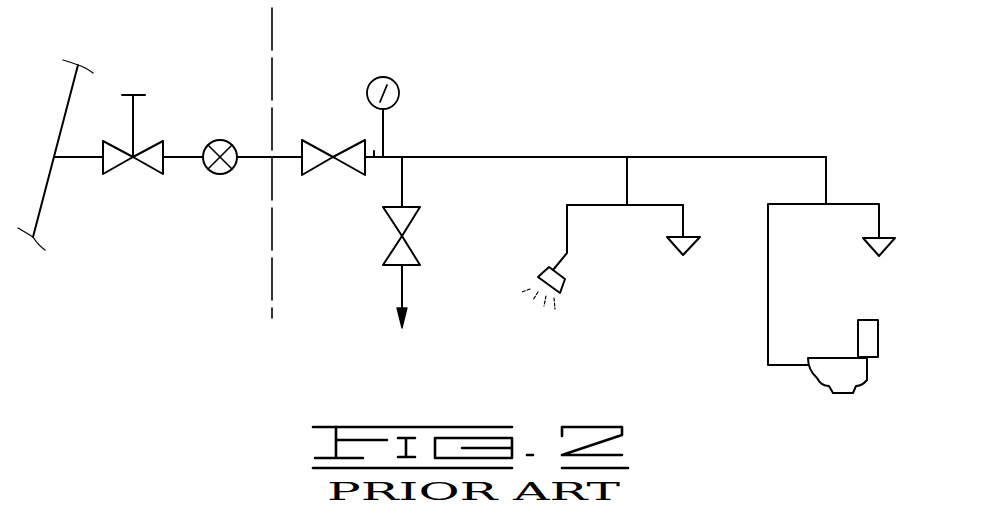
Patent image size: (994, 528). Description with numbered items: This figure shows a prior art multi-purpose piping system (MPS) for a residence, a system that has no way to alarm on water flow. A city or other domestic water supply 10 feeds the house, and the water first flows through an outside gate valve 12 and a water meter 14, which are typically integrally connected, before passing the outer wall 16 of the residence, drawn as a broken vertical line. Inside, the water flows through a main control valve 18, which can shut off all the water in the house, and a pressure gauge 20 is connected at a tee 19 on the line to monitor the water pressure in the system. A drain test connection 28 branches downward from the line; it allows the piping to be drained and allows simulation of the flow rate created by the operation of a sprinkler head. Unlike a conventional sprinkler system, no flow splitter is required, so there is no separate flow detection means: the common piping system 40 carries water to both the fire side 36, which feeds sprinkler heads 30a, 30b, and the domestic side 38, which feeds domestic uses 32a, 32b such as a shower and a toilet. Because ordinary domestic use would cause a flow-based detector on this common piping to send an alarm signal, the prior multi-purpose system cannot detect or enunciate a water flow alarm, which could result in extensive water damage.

The domestic water supply 10 is at (38, 213).
The outside gate valve 12 is at (148, 142).
The water meter 14 is at (218, 174).
The outer wall 16 is at (272, 30).
The main control valve 18 is at (350, 145).
The tee connection 19 is at (374, 152).
The pressure gauge 20 is at (397, 82).
The drain test connection 28 is at (392, 248).
The sprinkler head 30a is at (680, 248).
The sprinkler head 30b is at (870, 249).
The domestic use 32a is at (543, 267).
The domestic use 32b is at (822, 388).
The fire side 36 is at (683, 217).
The domestic side 38 is at (595, 205).
The common piping system 40 is at (760, 157).